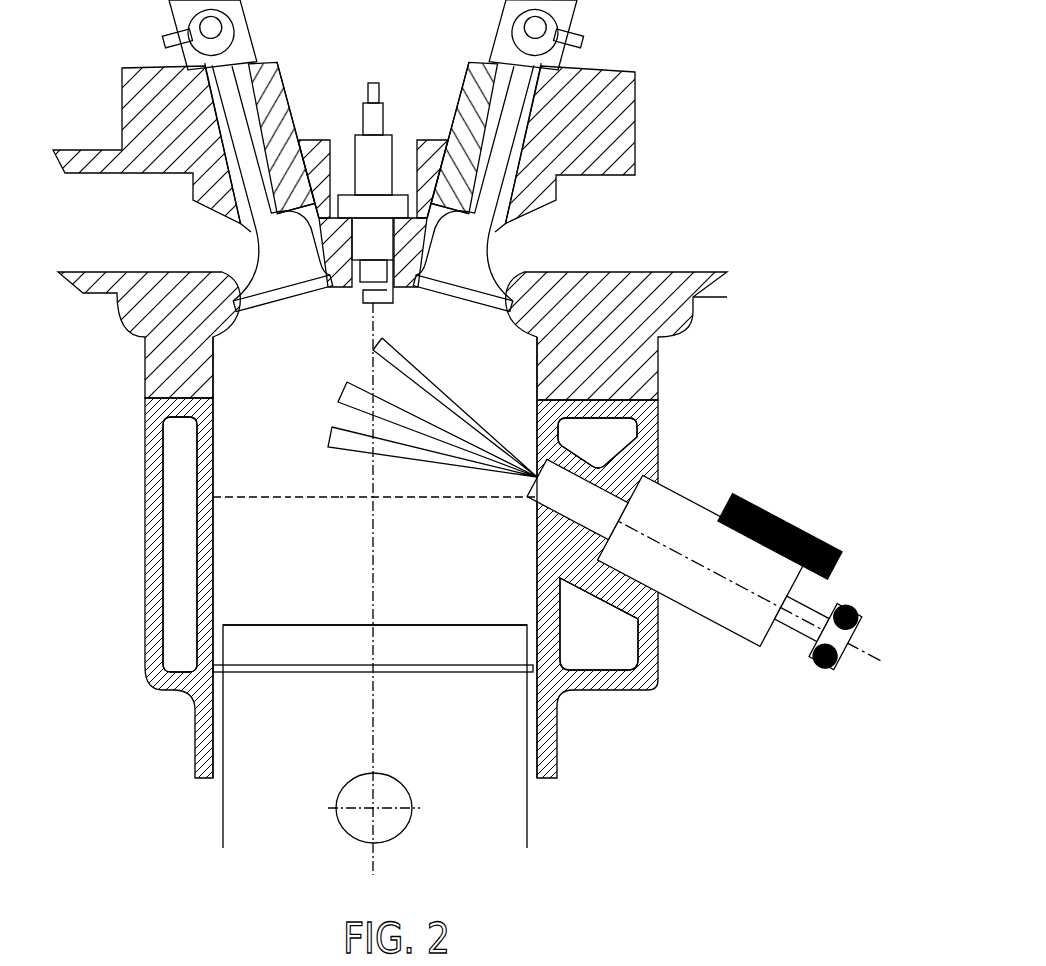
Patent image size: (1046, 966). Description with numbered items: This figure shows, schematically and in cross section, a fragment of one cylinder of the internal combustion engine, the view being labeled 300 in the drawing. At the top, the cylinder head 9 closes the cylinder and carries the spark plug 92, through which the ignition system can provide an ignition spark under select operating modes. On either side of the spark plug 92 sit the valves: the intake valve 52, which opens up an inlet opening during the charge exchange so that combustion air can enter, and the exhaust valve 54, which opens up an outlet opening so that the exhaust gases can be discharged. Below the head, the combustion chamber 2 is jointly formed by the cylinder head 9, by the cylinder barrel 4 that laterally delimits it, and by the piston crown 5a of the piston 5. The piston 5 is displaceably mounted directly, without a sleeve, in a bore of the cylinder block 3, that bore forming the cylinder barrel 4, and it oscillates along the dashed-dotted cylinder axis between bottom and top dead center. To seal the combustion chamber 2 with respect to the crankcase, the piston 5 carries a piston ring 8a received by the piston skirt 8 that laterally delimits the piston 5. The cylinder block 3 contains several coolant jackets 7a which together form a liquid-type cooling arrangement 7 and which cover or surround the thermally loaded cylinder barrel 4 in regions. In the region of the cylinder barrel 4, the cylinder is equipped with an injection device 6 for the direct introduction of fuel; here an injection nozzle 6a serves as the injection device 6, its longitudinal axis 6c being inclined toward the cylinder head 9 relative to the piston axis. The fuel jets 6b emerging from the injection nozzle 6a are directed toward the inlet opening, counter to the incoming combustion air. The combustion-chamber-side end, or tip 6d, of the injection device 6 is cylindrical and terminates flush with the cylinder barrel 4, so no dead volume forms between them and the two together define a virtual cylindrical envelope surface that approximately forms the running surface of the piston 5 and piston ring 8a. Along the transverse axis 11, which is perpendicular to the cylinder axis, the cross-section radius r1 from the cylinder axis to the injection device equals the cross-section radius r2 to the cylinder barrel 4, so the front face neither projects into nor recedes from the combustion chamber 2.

The combustion chamber 2 is at (301, 488).
The cylinder block 3 is at (175, 688).
The cylinder barrel 4 is at (218, 445).
The piston 5 is at (467, 769).
The piston crown 5a is at (305, 623).
The injection device 6 is at (710, 570).
The injection nozzle 6a is at (722, 607).
The fuel jets 6b is at (350, 445).
The longitudinal axis of the injection nozzle 6c is at (864, 652).
The combustion-chamber-side end / tip of the injection device 6d is at (534, 480).
The liquid-type cooling arrangement 7 is at (177, 582).
The coolant jacket 7a is at (613, 638).
The piston skirt 8 is at (255, 661).
The piston ring 8a is at (317, 667).
The cylinder head 9 is at (648, 292).
The transverse axis 11 is at (348, 500).
The intake valve 52 is at (265, 275).
The exhaust valve 54 is at (488, 246).
The spark plug 92 is at (374, 83).
The internal combustion engine 300 is at (690, 960).
The cross-section radius to the injection device r1 is at (455, 499).
The cross-section radius to the cylinder barrel r2 is at (283, 500).